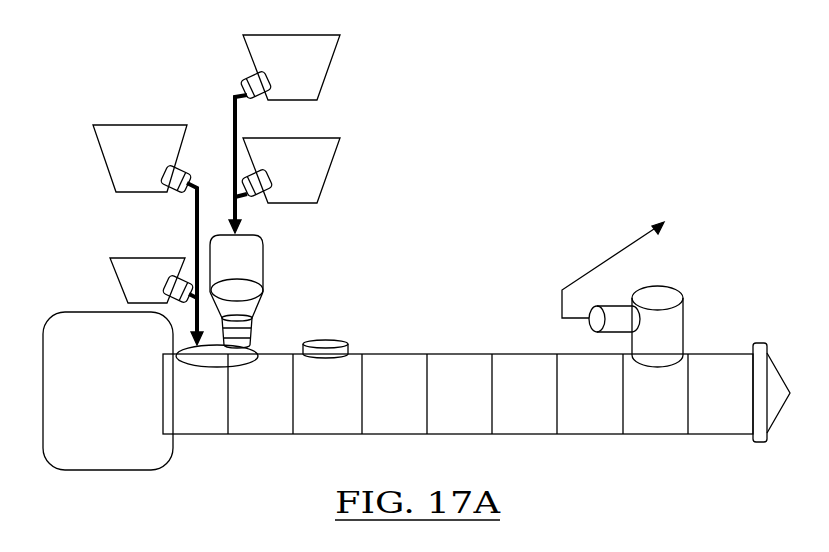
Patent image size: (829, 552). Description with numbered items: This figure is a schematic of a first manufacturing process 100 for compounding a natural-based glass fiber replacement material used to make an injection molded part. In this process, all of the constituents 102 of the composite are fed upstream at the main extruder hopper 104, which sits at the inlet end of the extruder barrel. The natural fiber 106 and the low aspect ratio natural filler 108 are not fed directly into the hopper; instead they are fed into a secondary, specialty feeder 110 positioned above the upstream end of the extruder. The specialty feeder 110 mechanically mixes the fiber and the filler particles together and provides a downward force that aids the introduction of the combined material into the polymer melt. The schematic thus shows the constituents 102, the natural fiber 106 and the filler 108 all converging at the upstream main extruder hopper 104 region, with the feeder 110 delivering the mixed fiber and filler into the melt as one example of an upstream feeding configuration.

The first manufacturing process 100 is at (512, 100).
The constituents 102 is at (93, 145).
The main extruder hopper 104 is at (158, 473).
The natural fiber 106 is at (330, 58).
The low aspect ratio natural filler 108 is at (330, 160).
The secondary specialty feeder 110 is at (262, 275).